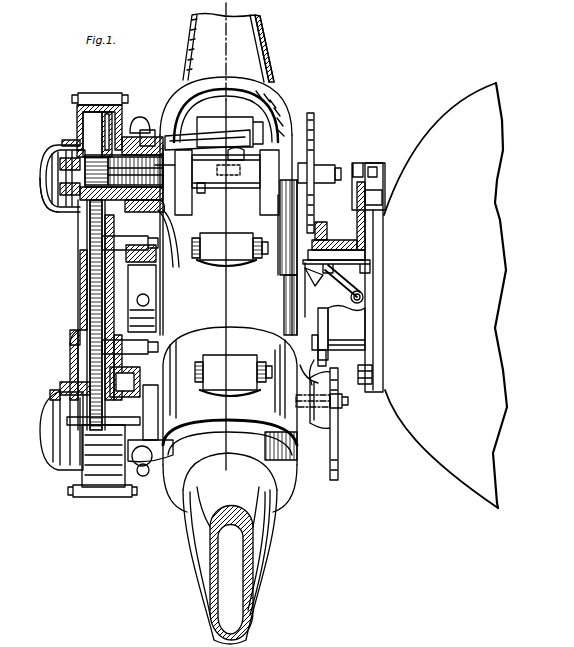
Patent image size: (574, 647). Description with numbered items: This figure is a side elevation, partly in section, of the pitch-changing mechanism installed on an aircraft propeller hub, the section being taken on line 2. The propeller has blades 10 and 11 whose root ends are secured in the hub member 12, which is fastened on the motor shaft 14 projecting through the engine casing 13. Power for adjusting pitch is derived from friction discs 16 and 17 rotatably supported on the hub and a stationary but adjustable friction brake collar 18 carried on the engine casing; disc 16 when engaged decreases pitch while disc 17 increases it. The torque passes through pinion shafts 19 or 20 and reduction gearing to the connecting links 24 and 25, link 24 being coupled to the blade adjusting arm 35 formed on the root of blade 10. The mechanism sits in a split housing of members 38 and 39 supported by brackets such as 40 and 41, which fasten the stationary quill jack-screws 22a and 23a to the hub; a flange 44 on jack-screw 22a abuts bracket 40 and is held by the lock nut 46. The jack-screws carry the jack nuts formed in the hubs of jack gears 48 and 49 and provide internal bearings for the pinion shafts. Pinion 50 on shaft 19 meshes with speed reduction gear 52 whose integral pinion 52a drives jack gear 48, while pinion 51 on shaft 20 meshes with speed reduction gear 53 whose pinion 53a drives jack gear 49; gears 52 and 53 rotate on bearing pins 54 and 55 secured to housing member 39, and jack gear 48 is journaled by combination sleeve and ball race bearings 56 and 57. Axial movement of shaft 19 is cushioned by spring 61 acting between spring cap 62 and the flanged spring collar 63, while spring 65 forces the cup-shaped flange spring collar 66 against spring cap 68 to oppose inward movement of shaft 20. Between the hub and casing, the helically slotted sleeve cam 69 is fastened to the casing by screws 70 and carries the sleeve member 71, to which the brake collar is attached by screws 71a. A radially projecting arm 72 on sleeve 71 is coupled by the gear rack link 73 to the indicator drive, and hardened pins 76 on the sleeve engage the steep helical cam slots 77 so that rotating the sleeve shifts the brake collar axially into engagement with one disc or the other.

The section line / axis 2 is at (216, 16).
The propeller blade 10 is at (266, 25).
The propeller blade 11 is at (272, 550).
The hub member 12 is at (228, 294).
The engine casing 13 is at (433, 127).
The motor shaft 14 is at (142, 298).
The friction disc 16 is at (315, 122).
The friction disc 17 is at (338, 468).
The friction brake collar 18 is at (319, 222).
The pinion shaft 19 is at (339, 170).
The pinion shaft 20 is at (345, 423).
The quill jack-screw 22a is at (190, 190).
The quill jack-screw 23a is at (135, 412).
The connecting link 24 is at (188, 135).
The connecting link 25 is at (156, 465).
The blade adjusting arm 35 is at (230, 132).
The housing member 38 is at (88, 285).
The housing member 39 is at (117, 307).
The bracket 40 is at (183, 182).
The bracket 41 is at (269, 182).
The flange 44 is at (167, 216).
The lock nut 46 is at (201, 191).
The jack gear 48 is at (106, 140).
The jack gear 49 is at (129, 382).
The pinion 50 is at (92, 134).
The pinion 51 is at (102, 461).
The speed reduction gear 52 is at (90, 228).
The pinion 52a is at (141, 255).
The speed reduction gear 53 is at (88, 336).
The pinion 53a is at (125, 356).
The bearing pin 54 is at (144, 245).
The bearing pin 55 is at (130, 346).
The combination sleeve and ball race bearing 56 is at (128, 128).
The combination sleeve and ball race bearing 57 is at (149, 130).
The spring 61 is at (52, 168).
The spring cap 62 is at (44, 190).
The flanged spring collar 63 is at (62, 146).
The spring 65 is at (70, 384).
The cup-shaped flange spring collar 66 is at (58, 396).
The spring cap 68 is at (52, 415).
The sleeve cam 69 is at (317, 290).
The screw 70 is at (362, 386).
The sleeve member 71 is at (338, 336).
The screw 71a is at (308, 372).
The radially projecting arm 72 is at (357, 204).
The gear rack link 73 is at (380, 190).
The hardened pin 76 is at (353, 238).
The helical cam slot 77 is at (310, 288).